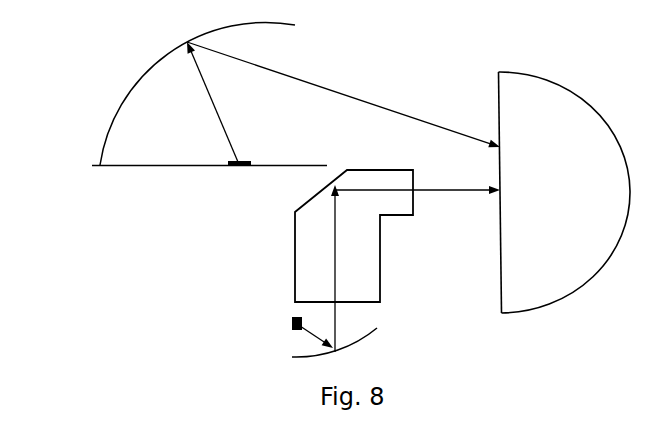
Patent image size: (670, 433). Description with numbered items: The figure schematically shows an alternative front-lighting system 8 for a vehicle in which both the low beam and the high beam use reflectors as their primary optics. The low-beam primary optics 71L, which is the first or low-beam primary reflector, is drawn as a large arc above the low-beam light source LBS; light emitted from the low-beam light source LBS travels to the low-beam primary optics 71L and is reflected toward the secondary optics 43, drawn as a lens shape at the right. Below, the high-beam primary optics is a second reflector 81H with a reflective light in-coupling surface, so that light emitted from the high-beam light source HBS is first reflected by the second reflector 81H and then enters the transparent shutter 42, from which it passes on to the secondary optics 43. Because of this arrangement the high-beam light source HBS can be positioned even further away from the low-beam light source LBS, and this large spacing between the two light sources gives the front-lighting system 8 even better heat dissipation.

The front-lighting system 8 is at (281, 171).
The low-beam primary optics 71L is at (165, 93).
The low-beam light source LBS is at (220, 126).
The secondary optics 43 is at (539, 192).
The transparent shutter 42 is at (397, 240).
The second reflector 81H is at (370, 342).
The high-beam light source HBS is at (274, 332).